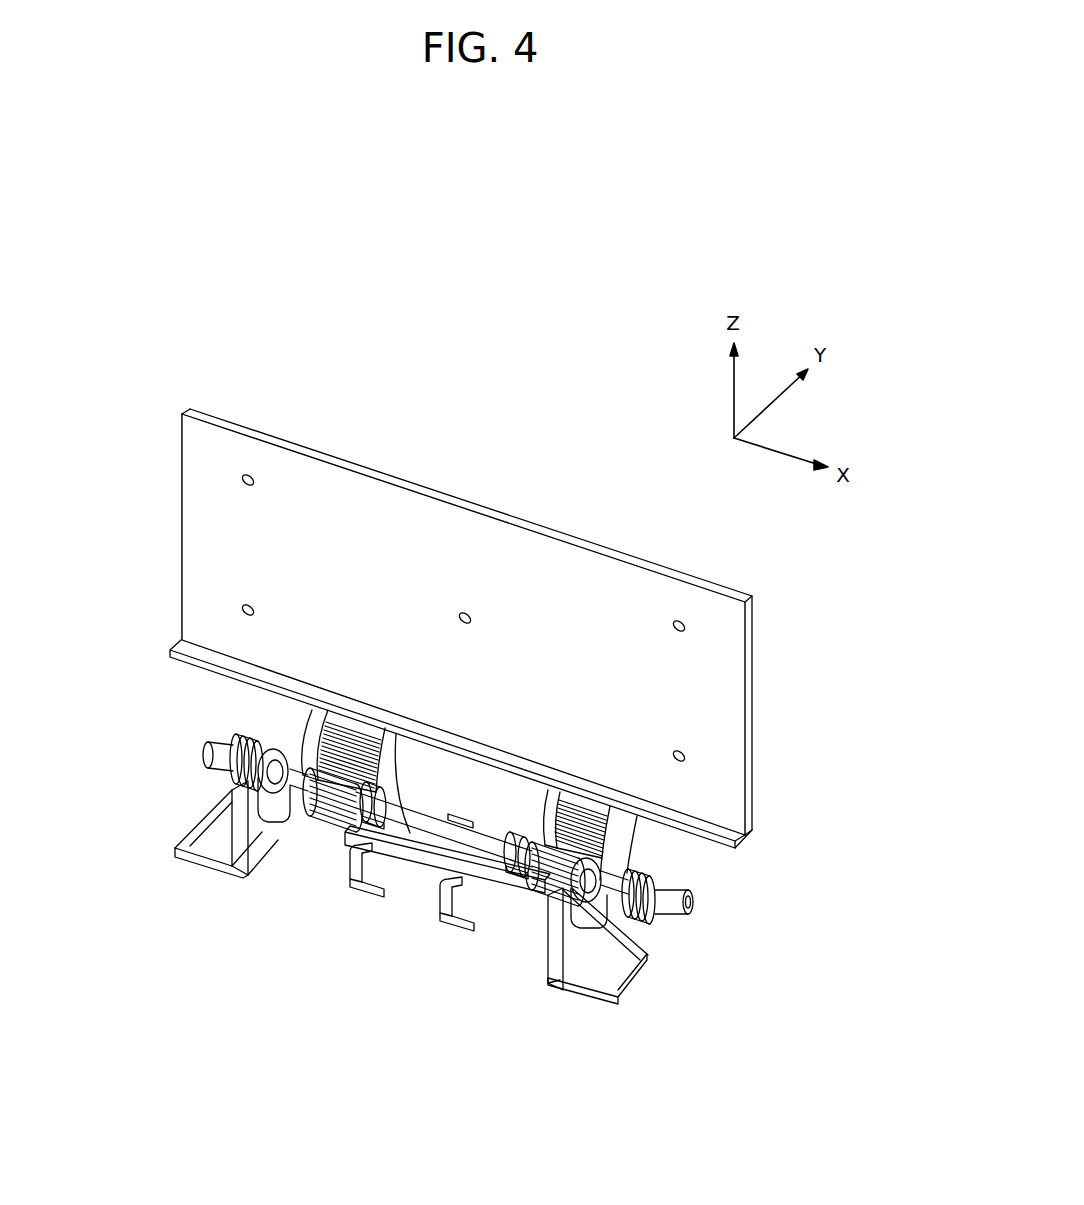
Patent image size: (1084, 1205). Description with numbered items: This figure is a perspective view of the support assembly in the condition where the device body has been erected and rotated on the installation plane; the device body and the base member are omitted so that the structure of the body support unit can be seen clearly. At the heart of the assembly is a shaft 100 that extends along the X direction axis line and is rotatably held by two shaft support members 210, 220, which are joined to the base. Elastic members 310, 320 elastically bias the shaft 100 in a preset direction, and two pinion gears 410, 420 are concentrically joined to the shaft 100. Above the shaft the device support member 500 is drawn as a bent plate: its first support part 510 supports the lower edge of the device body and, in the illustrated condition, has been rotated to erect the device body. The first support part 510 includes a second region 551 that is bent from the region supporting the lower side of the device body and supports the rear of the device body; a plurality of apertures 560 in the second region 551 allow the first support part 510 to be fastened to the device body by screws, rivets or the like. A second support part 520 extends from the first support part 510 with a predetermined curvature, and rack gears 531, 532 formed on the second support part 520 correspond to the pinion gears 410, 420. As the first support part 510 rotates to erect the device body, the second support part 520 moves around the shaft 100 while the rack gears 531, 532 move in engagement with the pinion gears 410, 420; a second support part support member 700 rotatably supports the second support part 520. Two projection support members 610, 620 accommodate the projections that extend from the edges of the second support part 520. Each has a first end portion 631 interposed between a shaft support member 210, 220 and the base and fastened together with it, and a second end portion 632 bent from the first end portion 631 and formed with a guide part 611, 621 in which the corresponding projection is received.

The shaft 100 is at (402, 820).
The shaft support member 210 is at (258, 800).
The shaft support member 220 is at (655, 965).
The elastic member 310 is at (225, 765).
The elastic member 320 is at (673, 920).
The pinion gear 410 is at (335, 803).
The pinion gear 420 is at (500, 908).
The device support member 500 is at (539, 635).
The first support part 510 is at (514, 600).
The second support part 520 is at (656, 839).
The rack gear 531 is at (325, 735).
The rack gear 532 is at (698, 925).
The second region 551 is at (418, 517).
The apertures 560 is at (250, 474).
The projection support member 610 is at (209, 869).
The guide part 611 is at (287, 813).
The projection support member 620 is at (578, 985).
The guide part 621 is at (573, 925).
The first end portion 631 is at (203, 837).
The second end portion 632 is at (257, 847).
The second support part support member 700 is at (385, 840).